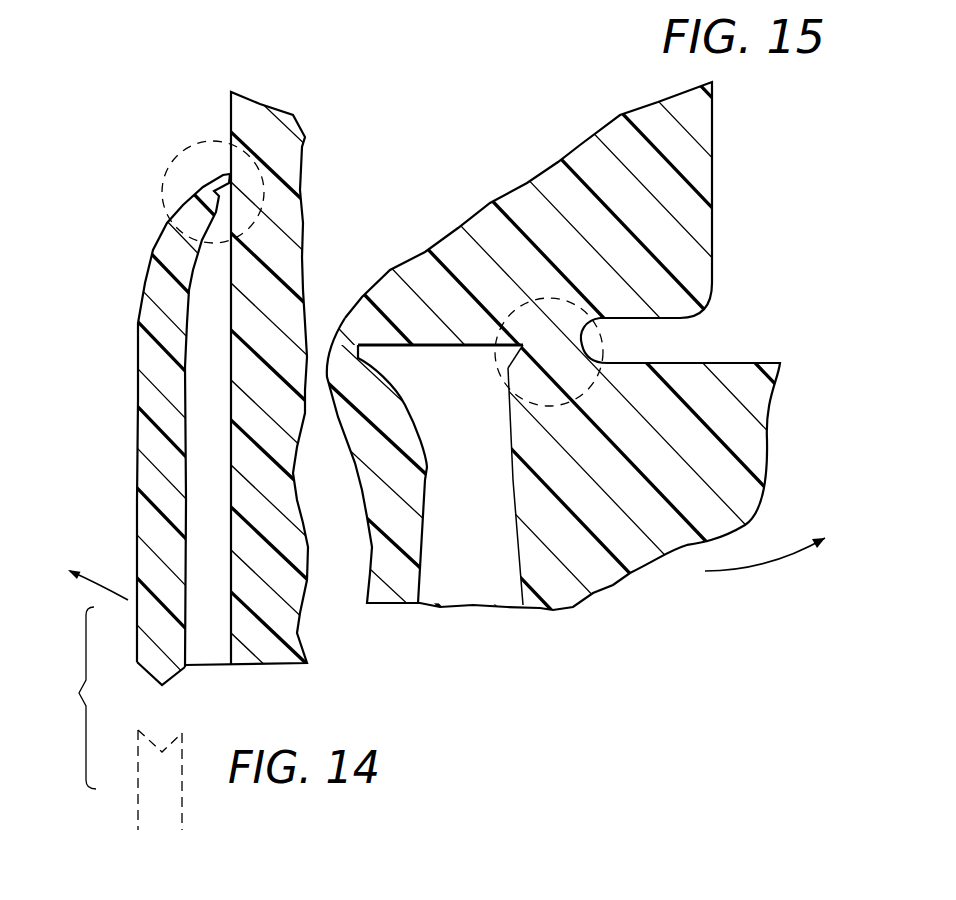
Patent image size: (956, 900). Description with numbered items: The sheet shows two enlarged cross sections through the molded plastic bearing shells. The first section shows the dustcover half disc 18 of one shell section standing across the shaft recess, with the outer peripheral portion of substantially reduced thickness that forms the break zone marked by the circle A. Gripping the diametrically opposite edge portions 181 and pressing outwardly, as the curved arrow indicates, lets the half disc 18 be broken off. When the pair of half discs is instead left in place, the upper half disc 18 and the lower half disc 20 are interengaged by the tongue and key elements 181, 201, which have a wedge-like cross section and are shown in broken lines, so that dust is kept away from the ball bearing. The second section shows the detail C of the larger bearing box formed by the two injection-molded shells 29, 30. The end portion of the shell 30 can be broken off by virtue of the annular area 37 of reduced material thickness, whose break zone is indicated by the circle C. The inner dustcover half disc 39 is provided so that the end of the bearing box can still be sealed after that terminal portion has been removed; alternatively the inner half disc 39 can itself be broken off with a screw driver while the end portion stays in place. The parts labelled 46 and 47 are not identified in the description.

In FIG. 14, the half disc 18 is at (158, 448).
In FIG. 14, the edge portion / tongue element 181 is at (160, 682).
In FIG. 14, the half disc 20 is at (148, 795).
In FIG. 14, the key element 201 is at (177, 728).
In FIG. 14, the shell 29 is at (237, 340).
In FIG. 15, the shell 29 is at (693, 168).
In FIG. 15, the shell 30 is at (755, 447).
In FIG. 15, the annular area of reduced thickness 37 is at (603, 347).
In FIG. 15, the inner dustcover half disc 39 is at (407, 577).
In FIG. 15, the edge of groove 46 is at (507, 350).
In FIG. 15, the slot between frame wall and body 47 is at (615, 332).
In FIG. 14, the detail / break zone A is at (228, 141).
In FIG. 15, the break zone C is at (588, 390).